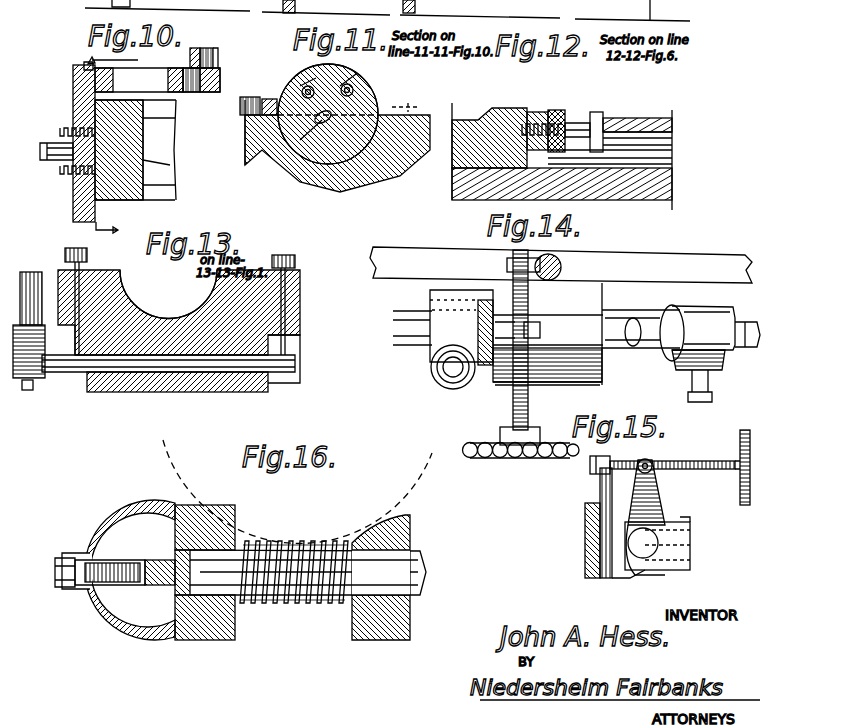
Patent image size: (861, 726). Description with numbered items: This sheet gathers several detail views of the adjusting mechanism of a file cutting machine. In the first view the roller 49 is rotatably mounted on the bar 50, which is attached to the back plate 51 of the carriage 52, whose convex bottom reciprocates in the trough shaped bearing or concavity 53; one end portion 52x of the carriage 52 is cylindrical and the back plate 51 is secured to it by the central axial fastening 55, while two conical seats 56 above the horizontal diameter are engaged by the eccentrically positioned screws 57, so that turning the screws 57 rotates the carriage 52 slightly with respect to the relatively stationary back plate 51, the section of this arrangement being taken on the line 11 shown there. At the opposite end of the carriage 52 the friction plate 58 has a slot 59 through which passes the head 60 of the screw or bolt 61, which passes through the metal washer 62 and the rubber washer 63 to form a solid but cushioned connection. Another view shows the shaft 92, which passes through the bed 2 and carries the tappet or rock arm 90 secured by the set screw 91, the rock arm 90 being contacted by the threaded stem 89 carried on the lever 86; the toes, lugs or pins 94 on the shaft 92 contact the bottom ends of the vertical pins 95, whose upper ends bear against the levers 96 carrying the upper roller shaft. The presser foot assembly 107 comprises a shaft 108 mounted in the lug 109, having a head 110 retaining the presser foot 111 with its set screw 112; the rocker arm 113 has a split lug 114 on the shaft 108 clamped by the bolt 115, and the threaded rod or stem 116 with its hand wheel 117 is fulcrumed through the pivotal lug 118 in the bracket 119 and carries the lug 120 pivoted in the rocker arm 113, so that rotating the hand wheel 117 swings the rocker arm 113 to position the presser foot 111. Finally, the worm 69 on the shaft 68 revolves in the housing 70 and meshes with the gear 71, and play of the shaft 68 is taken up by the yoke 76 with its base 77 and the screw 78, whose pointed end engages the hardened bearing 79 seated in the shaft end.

In FIG. 13, the bed 2 is at (300, 325).
In FIG. 10, the section line 11— 11 is at (126, 146).
In FIG. 10, the roller 49 is at (215, 52).
In FIG. 11, the roller 49 is at (250, 97).
In FIG. 10, the bar 50 is at (186, 96).
In FIG. 11, the bar 50 is at (268, 99).
In FIG. 10, the back plate 51 is at (73, 190).
In FIG. 11, the back plate 51 is at (413, 106).
In FIG. 10, the carriage 52 is at (158, 148).
In FIG. 12, the carriage 52 is at (500, 105).
In FIG. 10, the end portion of the carriage 52x is at (138, 163).
In FIG. 11, the end portion of the carriage 52x is at (368, 92).
In FIG. 11, the trough shaped bearing or concavity 53 is at (345, 180).
In FIG. 12, the trough shaped bearing or concavity 53 is at (672, 164).
In FIG. 13, the trough shaped bearing or concavity 53 is at (120, 275).
In FIG. 10, the central axial fastening 55 is at (47, 143).
In FIG. 11, the central axial fastening 55 is at (300, 150).
In FIG. 10, the conical seats 56 is at (102, 121).
In FIG. 11, the conical seats 56 is at (297, 82).
In FIG. 10, the screws 57 is at (62, 128).
In FIG. 11, the screws 57 is at (310, 88).
In FIG. 12, the friction plate 58 is at (672, 122).
In FIG. 12, the slot 59 is at (626, 120).
In FIG. 12, the head 60 is at (596, 112).
In FIG. 12, the screw or bolt 61 is at (536, 112).
In FIG. 12, the metal washer 62 is at (562, 122).
In FIG. 12, the rubber washer 63 is at (554, 110).
In FIG. 16, the shaft 68 is at (400, 573).
In FIG. 16, the worm 69 is at (266, 606).
In FIG. 16, the housing 70 is at (381, 591).
In FIG. 16, the gear 71 is at (420, 485).
In FIG. 16, the yoke 76 is at (112, 628).
In FIG. 16, the base 77 is at (185, 640).
In FIG. 16, the screw 78 is at (118, 586).
In FIG. 16, the hardened bearing 79 is at (165, 558).
In FIG. 14, the lever 86 is at (420, 255).
In FIG. 15, the lever 86 is at (585, 520).
In FIG. 13, the threaded stem 89 is at (34, 272).
In FIG. 13, the tappet or rock arm 90 is at (45, 380).
In FIG. 13, the set screw 91 is at (28, 392).
In FIG. 13, the shaft 92 is at (186, 392).
In FIG. 13, the toes, lugs or pins 94 is at (296, 367).
In FIG. 13, the vertical pins 95 is at (82, 275).
In FIG. 13, the levers 96 is at (78, 248).
In FIG. 14, the adjustable presser foot and its adjuncts 107 is at (575, 370).
In FIG. 14, the shaft 108 is at (393, 320).
In FIG. 15, the shaft 108 is at (608, 582).
In FIG. 14, the lug 109 is at (532, 385).
In FIG. 15, the lug 109 is at (666, 578).
In FIG. 14, the head 110 is at (724, 304).
In FIG. 14, the presser foot 111 is at (765, 318).
In FIG. 14, the set screw 112 is at (712, 396).
In FIG. 14, the rocker arm 113 is at (478, 340).
In FIG. 15, the rocker arm 113 is at (660, 488).
In FIG. 14, the split lug 114 is at (430, 298).
In FIG. 15, the split lug 114 is at (690, 534).
In FIG. 14, the bolt 115 is at (440, 369).
In FIG. 15, the bolt 115 is at (690, 520).
In FIG. 14, the threaded rod or stem 116 is at (513, 412).
In FIG. 15, the threaded rod or stem 116 is at (718, 452).
In FIG. 14, the hand wheel 117 is at (496, 460).
In FIG. 15, the hand wheel 117 is at (760, 424).
In FIG. 14, the pivotal lug 118 is at (507, 266).
In FIG. 15, the pivotal lug 118 is at (612, 454).
In FIG. 14, the bracket 119 is at (556, 278).
In FIG. 15, the bracket 119 is at (600, 486).
In FIG. 14, the lug 120 is at (534, 326).